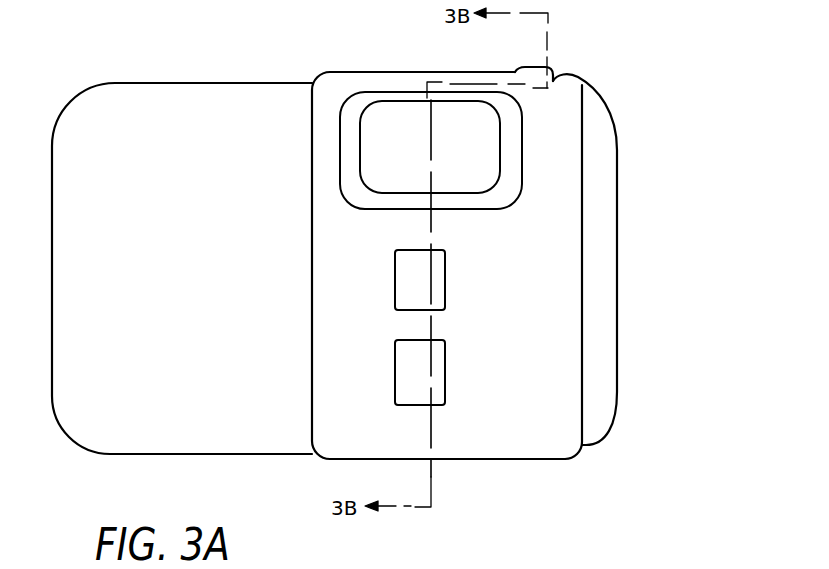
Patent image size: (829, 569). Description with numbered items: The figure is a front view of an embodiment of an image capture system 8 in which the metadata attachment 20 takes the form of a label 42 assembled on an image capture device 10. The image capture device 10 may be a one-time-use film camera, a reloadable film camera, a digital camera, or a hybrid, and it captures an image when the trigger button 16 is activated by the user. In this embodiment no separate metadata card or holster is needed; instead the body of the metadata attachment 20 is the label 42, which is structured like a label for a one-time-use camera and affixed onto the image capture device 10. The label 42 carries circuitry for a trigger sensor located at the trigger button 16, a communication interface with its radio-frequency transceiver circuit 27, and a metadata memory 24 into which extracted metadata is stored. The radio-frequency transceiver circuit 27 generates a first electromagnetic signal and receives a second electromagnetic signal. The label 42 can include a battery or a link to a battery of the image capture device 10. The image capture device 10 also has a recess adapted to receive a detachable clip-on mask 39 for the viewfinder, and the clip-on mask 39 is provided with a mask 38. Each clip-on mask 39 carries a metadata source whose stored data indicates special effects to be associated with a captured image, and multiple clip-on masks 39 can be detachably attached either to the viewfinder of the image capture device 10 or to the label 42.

The image capture system 8 is at (289, 71).
The image capture device 10 is at (128, 83).
The trigger button 16 is at (568, 90).
The metadata attachment 20 is at (541, 460).
The metadata memory 24 is at (445, 370).
The radio-frequency transceiver circuit 27 is at (445, 277).
The mask 38 is at (481, 161).
The clip-on mask 39 is at (522, 143).
The label 42 is at (478, 444).